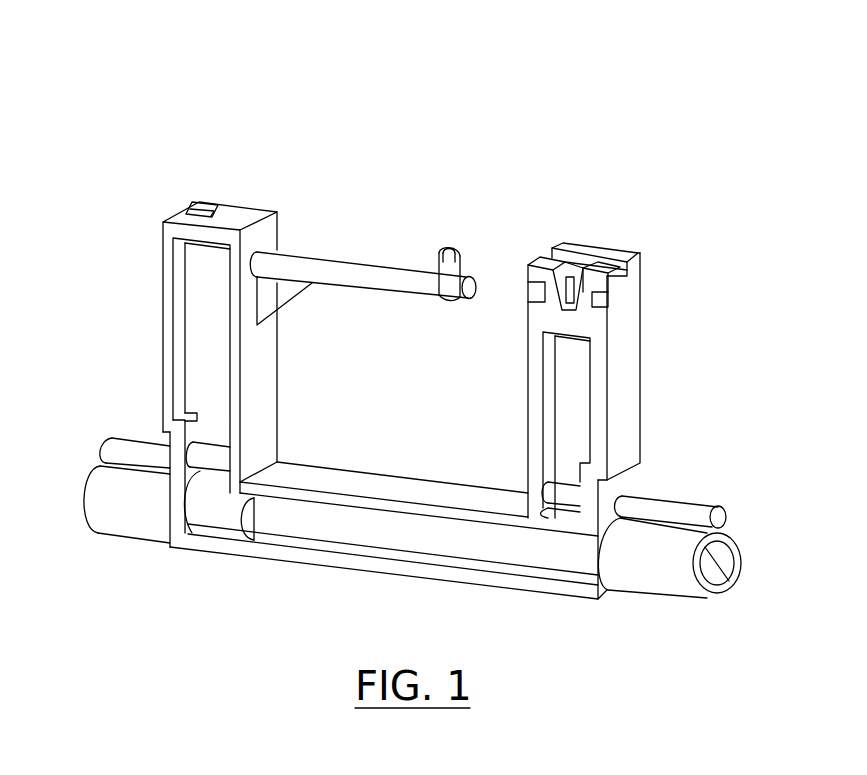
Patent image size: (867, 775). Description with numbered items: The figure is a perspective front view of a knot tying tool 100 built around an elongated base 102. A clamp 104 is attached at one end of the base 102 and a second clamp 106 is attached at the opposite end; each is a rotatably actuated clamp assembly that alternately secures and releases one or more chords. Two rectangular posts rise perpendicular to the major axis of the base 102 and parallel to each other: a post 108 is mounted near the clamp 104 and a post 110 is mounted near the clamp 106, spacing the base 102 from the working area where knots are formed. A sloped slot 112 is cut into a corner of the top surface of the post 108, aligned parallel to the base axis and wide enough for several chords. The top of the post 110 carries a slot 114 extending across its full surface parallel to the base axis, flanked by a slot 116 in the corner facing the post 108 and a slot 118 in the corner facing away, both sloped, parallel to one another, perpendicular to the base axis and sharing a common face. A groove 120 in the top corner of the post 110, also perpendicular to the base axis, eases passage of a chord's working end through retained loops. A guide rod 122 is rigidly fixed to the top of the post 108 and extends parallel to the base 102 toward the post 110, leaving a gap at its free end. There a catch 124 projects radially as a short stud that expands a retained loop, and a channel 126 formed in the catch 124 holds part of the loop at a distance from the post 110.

The knot tying tool 100 is at (366, 60).
The base 102 is at (340, 567).
The clamp 104 is at (93, 428).
The clamp 106 is at (735, 493).
The post 108 is at (163, 362).
The post 110 is at (643, 400).
The slot 112 is at (187, 212).
The slot 114 is at (623, 280).
The slot 116 is at (528, 290).
The slot 118 is at (610, 297).
The groove 120 is at (572, 278).
The rod 122 is at (398, 295).
The catch 124 is at (462, 258).
The channel 126 is at (442, 253).